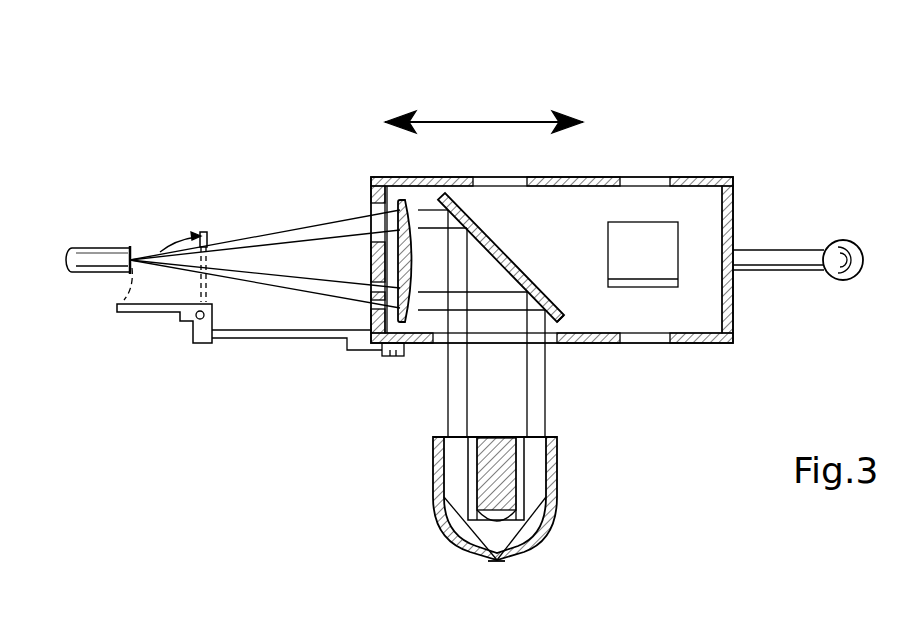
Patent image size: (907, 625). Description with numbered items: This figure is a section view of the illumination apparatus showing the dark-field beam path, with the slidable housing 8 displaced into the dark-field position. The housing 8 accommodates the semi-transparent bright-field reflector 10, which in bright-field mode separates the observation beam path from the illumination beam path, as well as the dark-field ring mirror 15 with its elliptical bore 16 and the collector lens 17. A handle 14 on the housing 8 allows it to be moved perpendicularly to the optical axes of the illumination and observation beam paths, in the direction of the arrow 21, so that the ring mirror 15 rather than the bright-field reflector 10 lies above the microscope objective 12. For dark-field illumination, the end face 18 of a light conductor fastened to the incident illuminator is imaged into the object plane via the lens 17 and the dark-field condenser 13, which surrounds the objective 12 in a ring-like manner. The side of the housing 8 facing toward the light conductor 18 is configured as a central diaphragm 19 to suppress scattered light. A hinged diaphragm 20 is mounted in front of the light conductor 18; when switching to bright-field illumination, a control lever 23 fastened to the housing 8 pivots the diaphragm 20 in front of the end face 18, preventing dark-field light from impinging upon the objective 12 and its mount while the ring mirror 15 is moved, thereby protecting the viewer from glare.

The housing 8 is at (735, 191).
The bright-field reflector 10 is at (641, 228).
The microscope objective 12 is at (505, 467).
The dark-field condenser 13 is at (553, 519).
The handle 14 is at (800, 258).
The ring mirror 15 is at (556, 310).
The elliptical bore 16 is at (489, 243).
The collector lens 17 is at (404, 200).
The end face of light conductor 18 is at (130, 250).
The central diaphragm 19 is at (370, 252).
The hinged diaphragm 20 is at (183, 318).
The arrow 21 is at (487, 120).
The control lever 23 is at (296, 338).